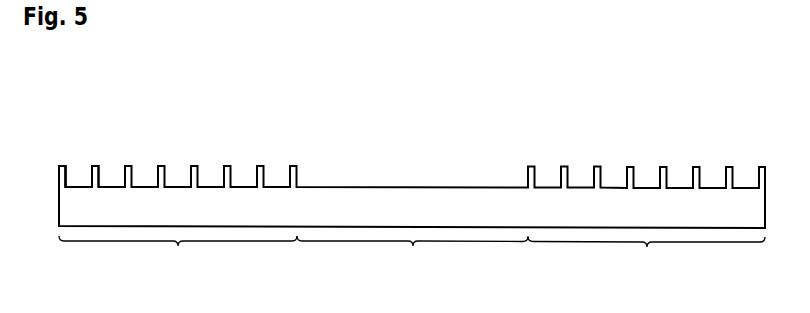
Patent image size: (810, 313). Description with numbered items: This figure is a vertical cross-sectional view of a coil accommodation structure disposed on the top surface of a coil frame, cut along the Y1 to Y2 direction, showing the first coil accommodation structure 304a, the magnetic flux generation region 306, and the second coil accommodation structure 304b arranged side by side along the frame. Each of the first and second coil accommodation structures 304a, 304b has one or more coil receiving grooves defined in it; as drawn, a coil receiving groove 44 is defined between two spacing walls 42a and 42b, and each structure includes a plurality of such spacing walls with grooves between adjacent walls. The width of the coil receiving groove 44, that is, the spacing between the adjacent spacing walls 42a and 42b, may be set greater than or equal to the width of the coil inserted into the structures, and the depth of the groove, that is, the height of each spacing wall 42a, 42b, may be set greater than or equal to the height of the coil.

The spacing wall 42a is at (59, 163).
The spacing wall 42b is at (102, 163).
The coil receiving groove 44 is at (83, 173).
The first coil accommodation structure 304a is at (178, 254).
The magnetic flux generation region 306 is at (412, 255).
The second coil accommodation structure 304b is at (646, 256).